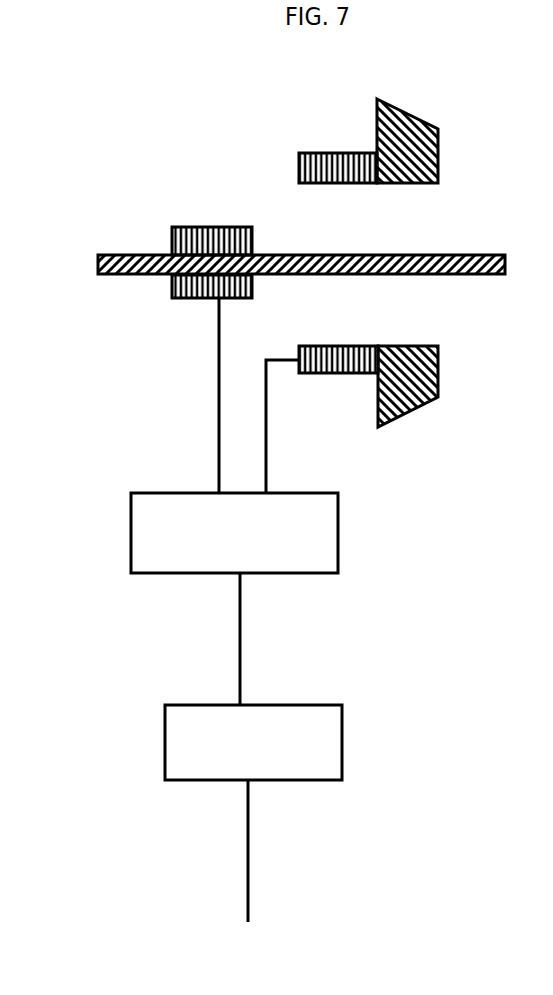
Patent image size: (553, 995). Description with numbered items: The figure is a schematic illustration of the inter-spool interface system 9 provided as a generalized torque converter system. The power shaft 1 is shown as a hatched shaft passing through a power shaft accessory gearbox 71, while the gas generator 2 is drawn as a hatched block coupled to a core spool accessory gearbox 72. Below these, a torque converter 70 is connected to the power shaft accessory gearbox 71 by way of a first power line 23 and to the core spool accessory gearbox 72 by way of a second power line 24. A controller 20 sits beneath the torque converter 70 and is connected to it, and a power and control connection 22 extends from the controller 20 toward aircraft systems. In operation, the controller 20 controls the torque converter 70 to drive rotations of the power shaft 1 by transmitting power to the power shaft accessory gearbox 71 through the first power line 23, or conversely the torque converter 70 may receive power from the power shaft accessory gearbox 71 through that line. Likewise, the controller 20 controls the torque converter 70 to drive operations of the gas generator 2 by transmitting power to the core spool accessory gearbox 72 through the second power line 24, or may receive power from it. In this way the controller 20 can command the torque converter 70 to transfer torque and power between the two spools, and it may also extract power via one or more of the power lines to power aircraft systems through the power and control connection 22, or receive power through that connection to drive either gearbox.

The power shaft 1 is at (160, 255).
The gas generator 2 is at (412, 143).
The inter-spool interface system 9 is at (133, 375).
The controller 20 is at (342, 742).
The power and control connection 22 is at (248, 845).
The first power line 23 is at (219, 418).
The second power line 24 is at (267, 418).
The torque converter 70 is at (338, 535).
The power shaft accessory gearbox 71 is at (172, 297).
The core spool accessory gearbox 72 is at (358, 373).